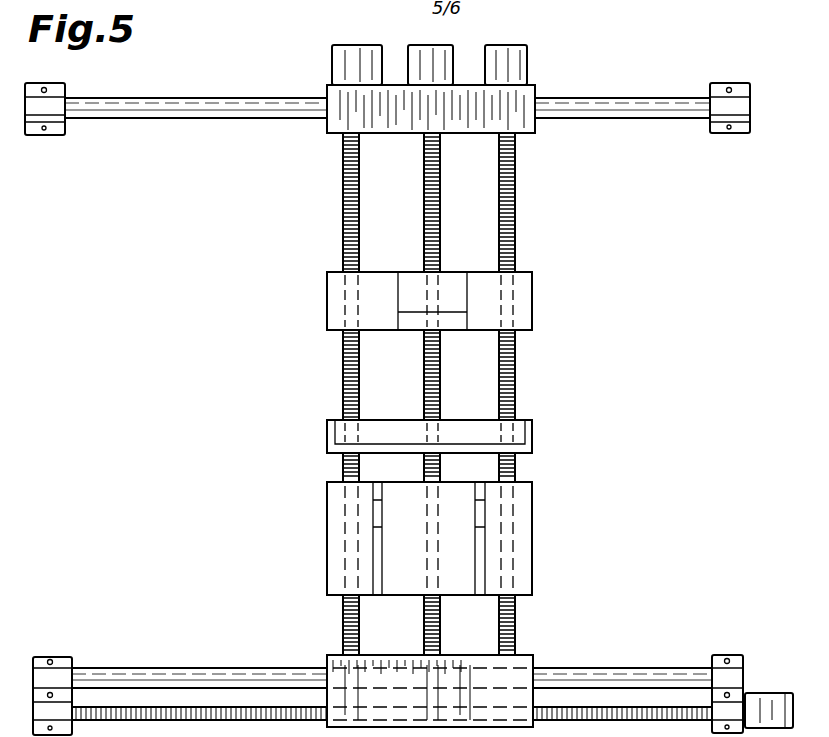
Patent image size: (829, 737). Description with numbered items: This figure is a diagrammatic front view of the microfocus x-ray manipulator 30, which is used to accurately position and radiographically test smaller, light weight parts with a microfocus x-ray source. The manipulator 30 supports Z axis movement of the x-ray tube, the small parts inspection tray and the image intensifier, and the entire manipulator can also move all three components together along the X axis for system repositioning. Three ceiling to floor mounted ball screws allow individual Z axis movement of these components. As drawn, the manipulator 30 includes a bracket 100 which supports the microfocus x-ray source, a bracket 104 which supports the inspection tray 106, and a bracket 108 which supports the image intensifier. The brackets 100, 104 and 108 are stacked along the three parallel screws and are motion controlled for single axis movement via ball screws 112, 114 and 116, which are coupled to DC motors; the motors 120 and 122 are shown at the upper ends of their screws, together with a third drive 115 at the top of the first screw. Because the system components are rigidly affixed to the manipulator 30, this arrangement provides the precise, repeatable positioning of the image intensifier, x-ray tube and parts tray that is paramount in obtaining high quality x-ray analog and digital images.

The microfocus x-ray manipulator 30 is at (600, 60).
The bracket 100 is at (532, 298).
The bracket 104 is at (461, 415).
The inspection tray 106 is at (461, 420).
The bracket 108 is at (532, 522).
The ball screw 112 is at (360, 219).
The ball screw 114 is at (450, 210).
The ball screw 116 is at (515, 219).
The first adjustment knob 115 is at (342, 45).
The DC motor 120 is at (428, 45).
The DC motor 122 is at (499, 45).